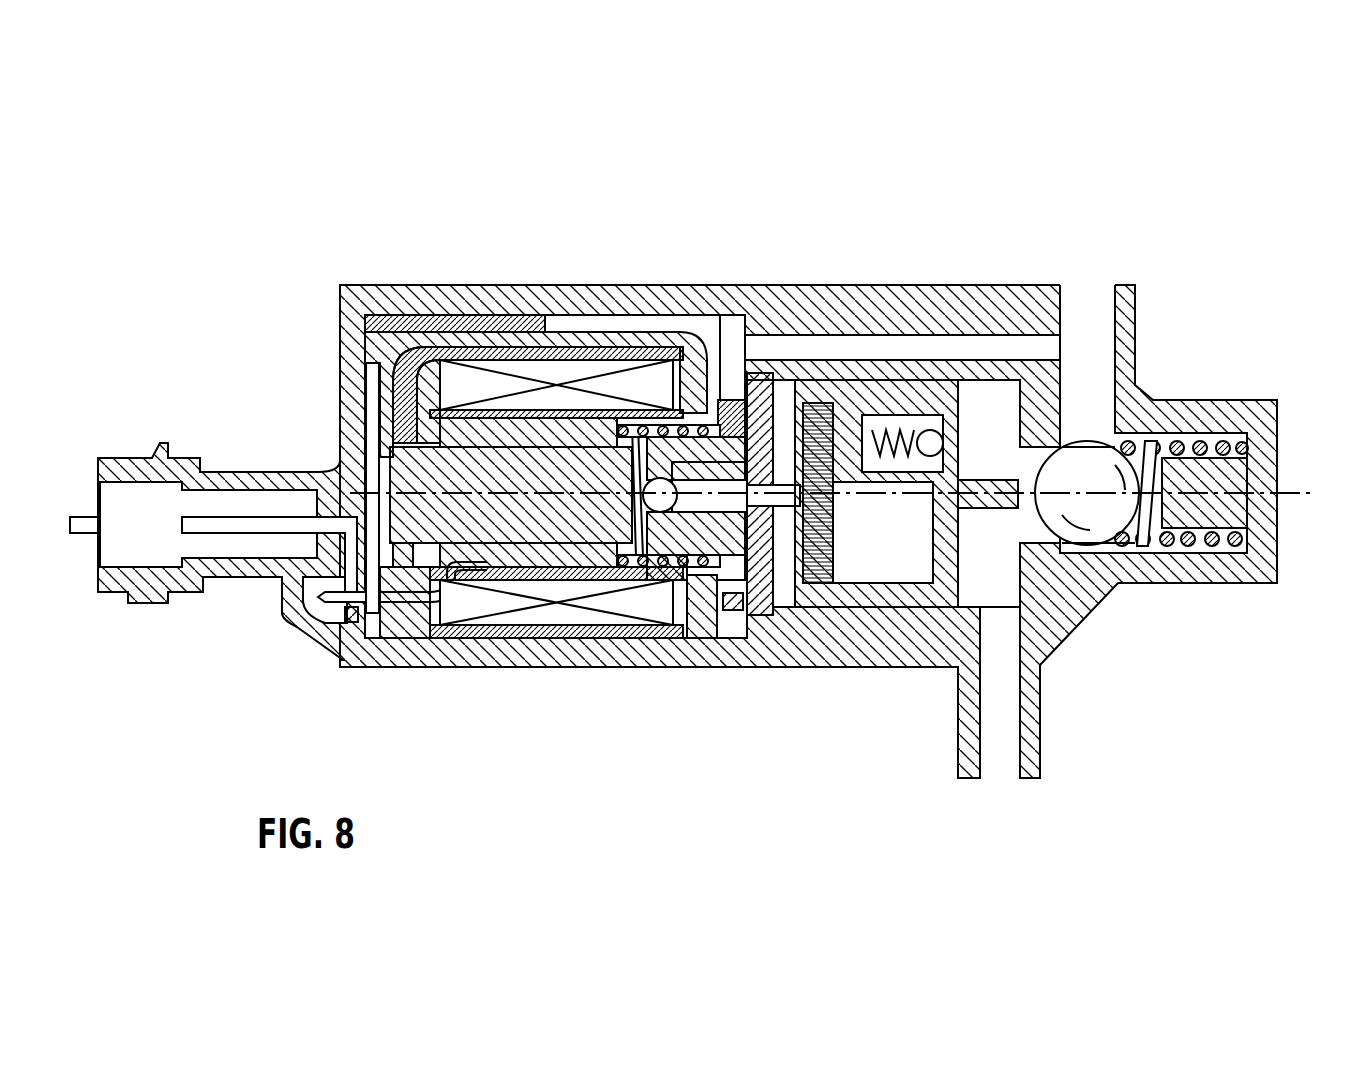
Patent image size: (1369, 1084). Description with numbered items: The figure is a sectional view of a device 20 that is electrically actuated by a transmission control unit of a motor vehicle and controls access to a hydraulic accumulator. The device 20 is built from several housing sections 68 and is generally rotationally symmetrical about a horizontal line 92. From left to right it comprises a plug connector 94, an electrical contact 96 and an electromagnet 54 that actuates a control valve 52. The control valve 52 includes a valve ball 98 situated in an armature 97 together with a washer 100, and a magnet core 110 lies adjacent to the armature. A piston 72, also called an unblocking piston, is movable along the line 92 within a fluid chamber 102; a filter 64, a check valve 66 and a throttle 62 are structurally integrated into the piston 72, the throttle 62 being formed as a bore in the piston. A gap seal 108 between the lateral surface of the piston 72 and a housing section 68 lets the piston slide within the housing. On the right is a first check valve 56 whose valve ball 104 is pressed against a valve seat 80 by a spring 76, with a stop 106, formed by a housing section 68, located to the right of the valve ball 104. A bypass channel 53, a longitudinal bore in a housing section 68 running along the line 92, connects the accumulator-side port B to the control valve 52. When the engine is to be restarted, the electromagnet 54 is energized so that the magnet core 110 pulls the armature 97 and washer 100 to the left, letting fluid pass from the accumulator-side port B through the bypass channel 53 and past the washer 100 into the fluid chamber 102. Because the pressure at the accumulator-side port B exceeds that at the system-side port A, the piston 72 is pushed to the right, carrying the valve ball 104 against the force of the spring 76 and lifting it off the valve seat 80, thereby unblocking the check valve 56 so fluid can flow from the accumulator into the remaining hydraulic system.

The device 20 is at (374, 231).
The control valve 52 is at (655, 334).
The bypass channel 53 is at (952, 345).
The electromagnet 54 is at (472, 396).
The first check valve 56 is at (1097, 422).
The throttle 62 is at (912, 540).
The filter 64 is at (820, 575).
The check valve 66 is at (881, 410).
The housing sections 68 is at (352, 325).
The piston 72 is at (850, 396).
The spring 76 is at (1192, 545).
The valve seat 80 is at (1066, 544).
The line 92 is at (1297, 494).
The plug connector 94 is at (88, 566).
The electrical contact 96 is at (312, 632).
The armature 97 is at (735, 412).
The valve ball 98 is at (650, 510).
The washer 100 is at (705, 580).
The fluid chamber 102 is at (972, 424).
The valve ball 104 is at (1094, 516).
The stop 106 is at (1166, 488).
The gap seal 108 is at (862, 605).
The magnet core 110 is at (548, 540).
The system-side port A is at (1004, 782).
The accumulator-side port B is at (1097, 272).